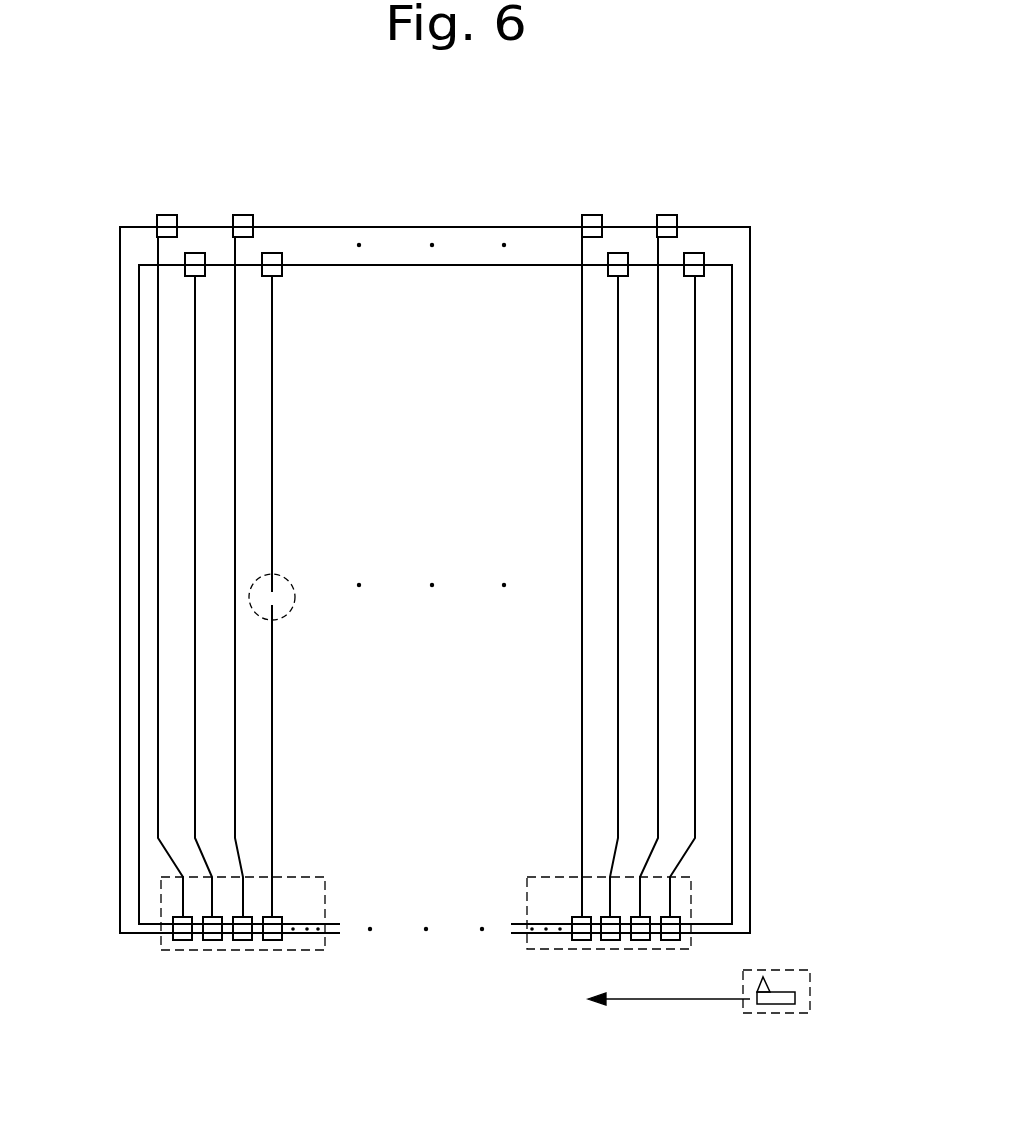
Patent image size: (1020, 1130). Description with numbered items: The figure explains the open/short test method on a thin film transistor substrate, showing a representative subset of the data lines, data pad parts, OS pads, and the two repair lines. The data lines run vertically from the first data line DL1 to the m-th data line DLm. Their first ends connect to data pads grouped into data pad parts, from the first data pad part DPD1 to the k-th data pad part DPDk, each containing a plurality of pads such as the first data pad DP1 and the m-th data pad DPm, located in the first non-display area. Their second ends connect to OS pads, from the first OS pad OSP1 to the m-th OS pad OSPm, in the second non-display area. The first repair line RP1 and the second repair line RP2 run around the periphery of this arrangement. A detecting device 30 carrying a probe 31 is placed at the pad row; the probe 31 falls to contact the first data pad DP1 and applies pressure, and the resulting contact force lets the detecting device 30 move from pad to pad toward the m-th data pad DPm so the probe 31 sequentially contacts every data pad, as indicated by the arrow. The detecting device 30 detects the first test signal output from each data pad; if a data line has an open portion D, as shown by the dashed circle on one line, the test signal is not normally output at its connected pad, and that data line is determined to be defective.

The m-th OS pad OSPm is at (167, 215).
The first OS pad OSP1 is at (694, 252).
The second repair line RP2 is at (750, 478).
The first repair line RP1 is at (731, 527).
The first data line DL1 is at (695, 587).
The m-th data line DLm is at (158, 597).
The open portion D is at (283, 577).
The m-th data pad DPm is at (182, 940).
The k-th data pad part DPDk is at (268, 950).
The first data pad part DPD1 is at (562, 950).
The first data pad DP1 is at (670, 940).
The detecting device 30 is at (810, 990).
The probe 31 is at (762, 1005).